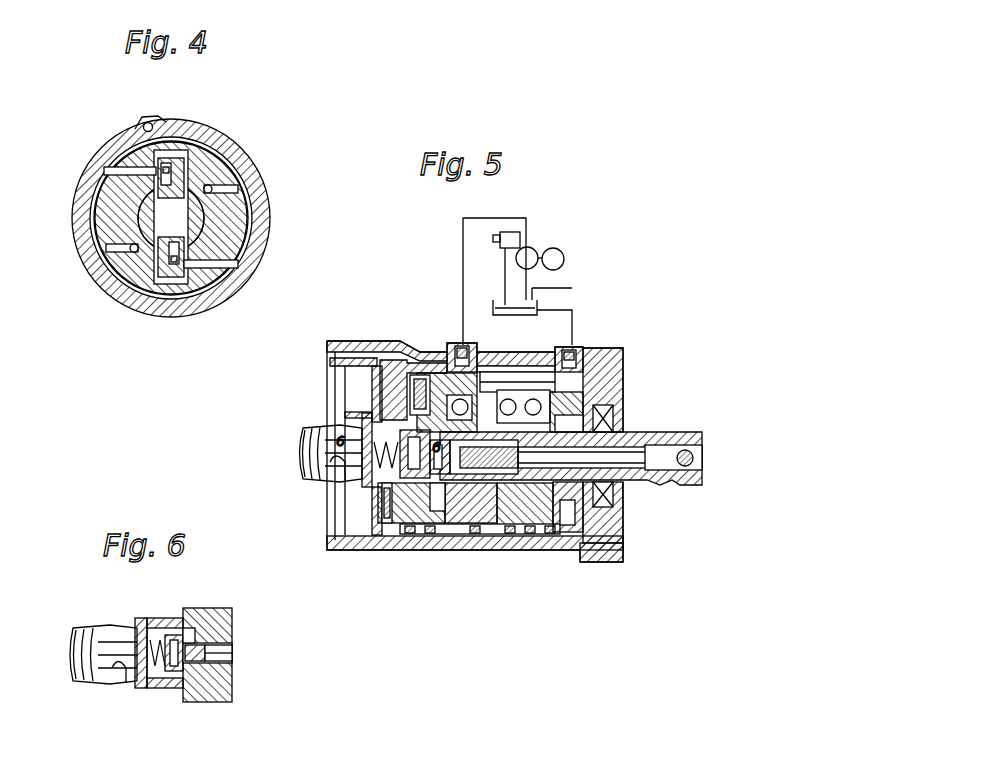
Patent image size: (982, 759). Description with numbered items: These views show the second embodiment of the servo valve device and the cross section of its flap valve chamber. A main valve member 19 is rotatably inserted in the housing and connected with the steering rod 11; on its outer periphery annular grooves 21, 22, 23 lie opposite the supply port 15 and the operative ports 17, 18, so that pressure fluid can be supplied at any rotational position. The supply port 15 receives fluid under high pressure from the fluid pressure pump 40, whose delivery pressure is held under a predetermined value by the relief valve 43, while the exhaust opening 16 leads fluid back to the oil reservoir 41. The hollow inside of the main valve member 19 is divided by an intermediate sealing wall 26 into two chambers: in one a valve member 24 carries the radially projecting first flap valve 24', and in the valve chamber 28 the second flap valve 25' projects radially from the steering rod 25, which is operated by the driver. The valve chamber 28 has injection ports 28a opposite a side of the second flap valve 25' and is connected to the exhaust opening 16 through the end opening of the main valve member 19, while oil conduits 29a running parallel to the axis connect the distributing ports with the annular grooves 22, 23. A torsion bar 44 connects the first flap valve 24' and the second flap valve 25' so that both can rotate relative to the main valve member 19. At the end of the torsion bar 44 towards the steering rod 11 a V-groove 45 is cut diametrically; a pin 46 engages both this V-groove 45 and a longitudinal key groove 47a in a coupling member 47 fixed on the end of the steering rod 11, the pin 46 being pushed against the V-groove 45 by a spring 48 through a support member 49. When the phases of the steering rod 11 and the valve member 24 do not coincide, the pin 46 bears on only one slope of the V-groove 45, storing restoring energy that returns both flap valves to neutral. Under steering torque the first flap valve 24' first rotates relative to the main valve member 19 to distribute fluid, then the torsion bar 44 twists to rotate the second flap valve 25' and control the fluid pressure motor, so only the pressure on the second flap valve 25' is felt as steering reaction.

In FIG. 5, the steering rod 11 is at (300, 440).
In FIG. 6, the steering rod 11 is at (95, 685).
In FIG. 5, the supply port 15 is at (462, 345).
In FIG. 5, the exhaust opening 16 is at (590, 350).
In FIG. 4, the operative port 17 is at (145, 125).
In FIG. 5, the operative port 17 is at (560, 352).
In FIG. 5, the operative port 18 is at (505, 548).
In FIG. 5, the main valve member 19 is at (493, 365).
In FIG. 5, the annular groove 21 is at (458, 548).
In FIG. 4, the annular groove 22 is at (227, 148).
In FIG. 5, the annular groove 22 is at (570, 550).
In FIG. 5, the annular groove 23 is at (540, 548).
In FIG. 5, the valve member 24 is at (440, 352).
In FIG. 5, the first flap valve 24' is at (431, 344).
In FIG. 5, the steering rod 25 is at (571, 420).
In FIG. 4, the second flap valve 25' is at (212, 220).
In FIG. 5, the second flap valve 25' is at (523, 370).
In FIG. 5, the intermediate sealing wall 26 is at (482, 548).
In FIG. 4, the valve chamber 28 is at (135, 300).
In FIG. 4, the injection port 28a is at (120, 173).
In FIG. 4, the oil conduit 29a is at (247, 156).
In FIG. 5, the fluid pressure pump 40 is at (532, 256).
In FIG. 5, the oil reservoir 41 is at (545, 304).
In FIG. 5, the relief valve 43 is at (515, 240).
In FIG. 5, the torsion bar 44 is at (640, 487).
In FIG. 6, the torsion bar 44 is at (235, 660).
In FIG. 5, the V-groove 45 is at (420, 540).
In FIG. 6, the V-groove 45 is at (205, 697).
In FIG. 5, the pin 46 is at (392, 540).
In FIG. 6, the pin 46 is at (183, 695).
In FIG. 5, the coupling member 47 is at (372, 530).
In FIG. 6, the coupling member 47 is at (168, 690).
In FIG. 5, the key groove 47a is at (365, 468).
In FIG. 5, the spring 48 is at (365, 430).
In FIG. 6, the spring 48 is at (136, 686).
In FIG. 5, the support member 49 is at (352, 395).
In FIG. 6, the support member 49 is at (152, 690).